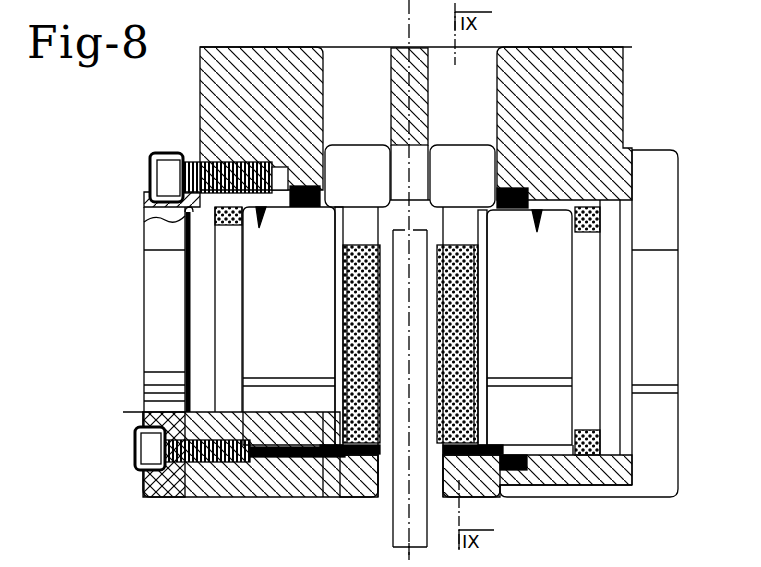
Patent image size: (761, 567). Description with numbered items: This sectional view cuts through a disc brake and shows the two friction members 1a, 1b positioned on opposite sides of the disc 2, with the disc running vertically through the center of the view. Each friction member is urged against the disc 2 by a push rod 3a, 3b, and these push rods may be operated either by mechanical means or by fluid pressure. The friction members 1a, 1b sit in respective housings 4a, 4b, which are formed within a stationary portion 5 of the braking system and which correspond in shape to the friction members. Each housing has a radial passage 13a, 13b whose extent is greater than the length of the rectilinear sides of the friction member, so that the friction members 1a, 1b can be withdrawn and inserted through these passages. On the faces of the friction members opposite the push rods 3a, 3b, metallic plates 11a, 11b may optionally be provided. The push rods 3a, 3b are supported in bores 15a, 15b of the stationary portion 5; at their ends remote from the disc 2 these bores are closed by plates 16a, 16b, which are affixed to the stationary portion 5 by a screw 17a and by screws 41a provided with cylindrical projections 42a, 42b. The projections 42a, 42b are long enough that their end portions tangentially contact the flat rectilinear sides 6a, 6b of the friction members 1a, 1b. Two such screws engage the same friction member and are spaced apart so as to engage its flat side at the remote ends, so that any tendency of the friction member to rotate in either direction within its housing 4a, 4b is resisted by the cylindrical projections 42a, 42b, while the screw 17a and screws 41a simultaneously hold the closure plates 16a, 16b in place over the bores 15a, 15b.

The friction member 1a is at (334, 355).
The friction member 1b is at (480, 352).
The disc 2 is at (410, 392).
The push rod 3a is at (289, 326).
The push rod 3b is at (529, 327).
The housing 4a is at (345, 188).
The housing 4b is at (447, 167).
The stationary portion 5 is at (607, 58).
The rectilinear side 6a is at (367, 468).
The rectilinear side 6b is at (476, 470).
The metallic plate 11a is at (338, 320).
The metallic plate 11b is at (480, 328).
The radial passage 13a is at (343, 70).
The radial passage 13b is at (468, 72).
The bore 15a is at (259, 222).
The bore 15b is at (537, 230).
The plate 16a is at (160, 260).
The plate 16b is at (661, 274).
The screw 17a is at (170, 180).
The screw 41a is at (152, 450).
The cylindrical projection 42a is at (330, 467).
The cylindrical projection 42b is at (505, 463).